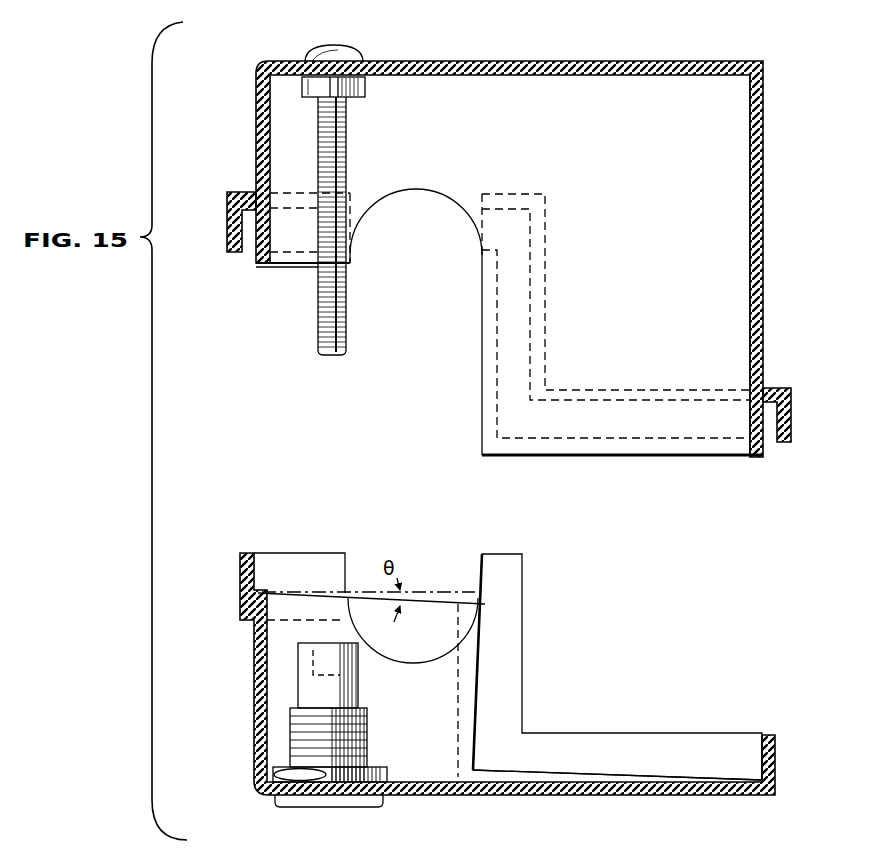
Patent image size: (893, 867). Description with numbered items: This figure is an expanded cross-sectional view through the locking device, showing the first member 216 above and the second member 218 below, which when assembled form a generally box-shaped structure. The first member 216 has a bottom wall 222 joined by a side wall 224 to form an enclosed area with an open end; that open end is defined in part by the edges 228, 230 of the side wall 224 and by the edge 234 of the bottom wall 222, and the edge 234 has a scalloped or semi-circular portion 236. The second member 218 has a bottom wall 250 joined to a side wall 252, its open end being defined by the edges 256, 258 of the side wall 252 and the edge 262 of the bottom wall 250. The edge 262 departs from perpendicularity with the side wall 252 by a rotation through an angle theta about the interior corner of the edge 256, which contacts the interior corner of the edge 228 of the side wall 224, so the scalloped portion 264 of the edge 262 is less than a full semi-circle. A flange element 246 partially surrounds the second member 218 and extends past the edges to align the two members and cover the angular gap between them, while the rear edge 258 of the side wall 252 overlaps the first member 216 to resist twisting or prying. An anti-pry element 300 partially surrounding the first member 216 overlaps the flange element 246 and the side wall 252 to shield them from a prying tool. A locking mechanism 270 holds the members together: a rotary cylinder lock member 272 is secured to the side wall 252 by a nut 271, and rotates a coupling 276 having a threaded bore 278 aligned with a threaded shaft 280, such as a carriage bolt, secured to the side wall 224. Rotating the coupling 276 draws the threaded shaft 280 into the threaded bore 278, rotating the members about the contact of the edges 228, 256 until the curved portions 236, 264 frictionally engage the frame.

The first member 216 is at (532, 259).
The second member 218 is at (504, 698).
The bottom wall 222 is at (597, 56).
The side wall 224 is at (762, 248).
The edge 228 is at (263, 266).
The edge 230 is at (758, 458).
The edge 234 is at (482, 413).
The semi-circular portion 236 is at (423, 197).
The flange element 246 is at (240, 574).
The bottom wall 250 is at (282, 697).
The side wall 252 is at (252, 727).
The edge 256 is at (259, 590).
The rear edge 258 is at (764, 734).
The edge 262 is at (600, 773).
The semi-circular portion 264 is at (412, 660).
The locking mechanism 270 is at (312, 806).
The nut 271 is at (361, 795).
The rotary cylinder lock member 272 is at (367, 742).
The coupling 276 is at (360, 697).
The threaded bore 278 is at (312, 655).
The threaded shaft 280 is at (350, 165).
The anti-pry element 300 is at (230, 208).